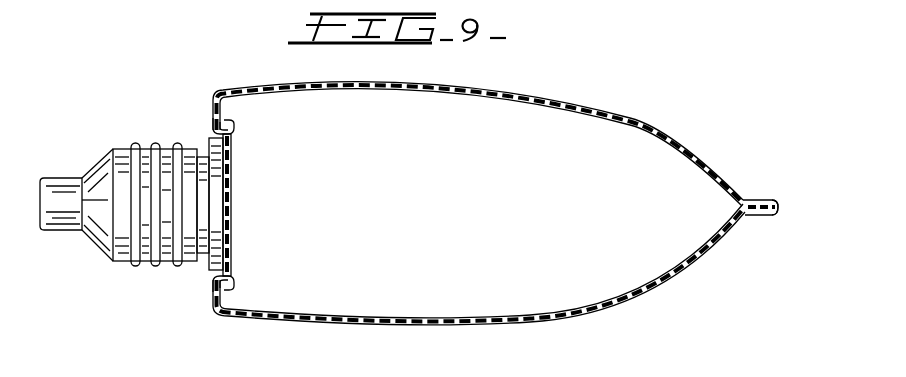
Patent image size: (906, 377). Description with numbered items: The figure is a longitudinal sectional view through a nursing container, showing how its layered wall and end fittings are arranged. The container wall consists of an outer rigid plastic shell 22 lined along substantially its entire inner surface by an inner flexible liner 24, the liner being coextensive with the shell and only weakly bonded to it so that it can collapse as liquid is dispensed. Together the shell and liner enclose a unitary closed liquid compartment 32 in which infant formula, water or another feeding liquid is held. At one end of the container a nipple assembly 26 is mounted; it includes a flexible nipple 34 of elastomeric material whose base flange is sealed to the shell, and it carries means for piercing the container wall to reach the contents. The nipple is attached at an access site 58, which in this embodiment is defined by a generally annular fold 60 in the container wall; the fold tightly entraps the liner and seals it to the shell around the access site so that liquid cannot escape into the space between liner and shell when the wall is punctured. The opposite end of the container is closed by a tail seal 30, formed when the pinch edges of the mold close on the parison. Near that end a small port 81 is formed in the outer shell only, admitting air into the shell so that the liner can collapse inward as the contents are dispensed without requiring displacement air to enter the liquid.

The outer rigid plastic shell 22 is at (361, 323).
The inner flexible liner 24 is at (326, 312).
The nipple assembly 26 is at (124, 196).
The tail seal 30 is at (752, 199).
The liquid compartment 32 is at (502, 218).
The flexible nipple 34 is at (118, 262).
The access site 58 is at (243, 138).
The annular fold 60 is at (240, 121).
The port 81 is at (774, 216).